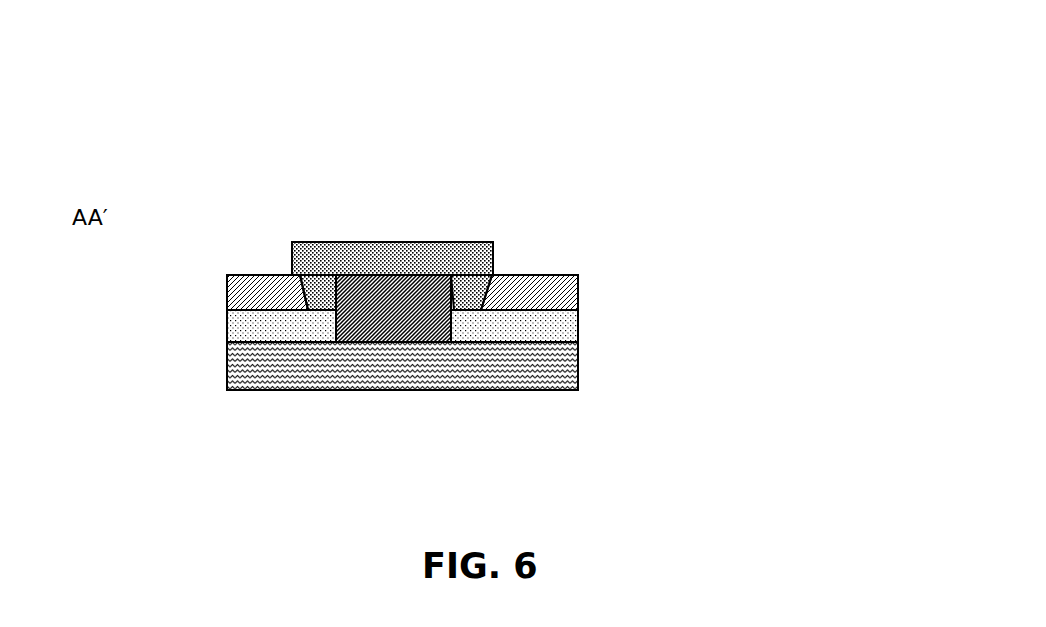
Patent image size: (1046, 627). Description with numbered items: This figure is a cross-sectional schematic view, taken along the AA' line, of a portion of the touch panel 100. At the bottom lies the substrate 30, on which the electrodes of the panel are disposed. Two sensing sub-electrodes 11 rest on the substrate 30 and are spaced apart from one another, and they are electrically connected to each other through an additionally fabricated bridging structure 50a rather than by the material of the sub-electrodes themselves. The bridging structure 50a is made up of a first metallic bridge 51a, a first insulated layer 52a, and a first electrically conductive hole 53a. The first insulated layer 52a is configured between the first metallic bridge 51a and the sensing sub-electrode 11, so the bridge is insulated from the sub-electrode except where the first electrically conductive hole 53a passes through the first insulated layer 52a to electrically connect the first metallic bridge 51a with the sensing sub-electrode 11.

The touch panel 100 is at (655, 112).
The substrate 30 is at (523, 392).
The sensing sub-electrode 11 is at (227, 324).
The bridging structure 50a is at (415, 175).
The first metallic bridge 51a is at (320, 243).
The first insulated layer 52a is at (378, 275).
The first electrically conductive hole 53a is at (487, 288).